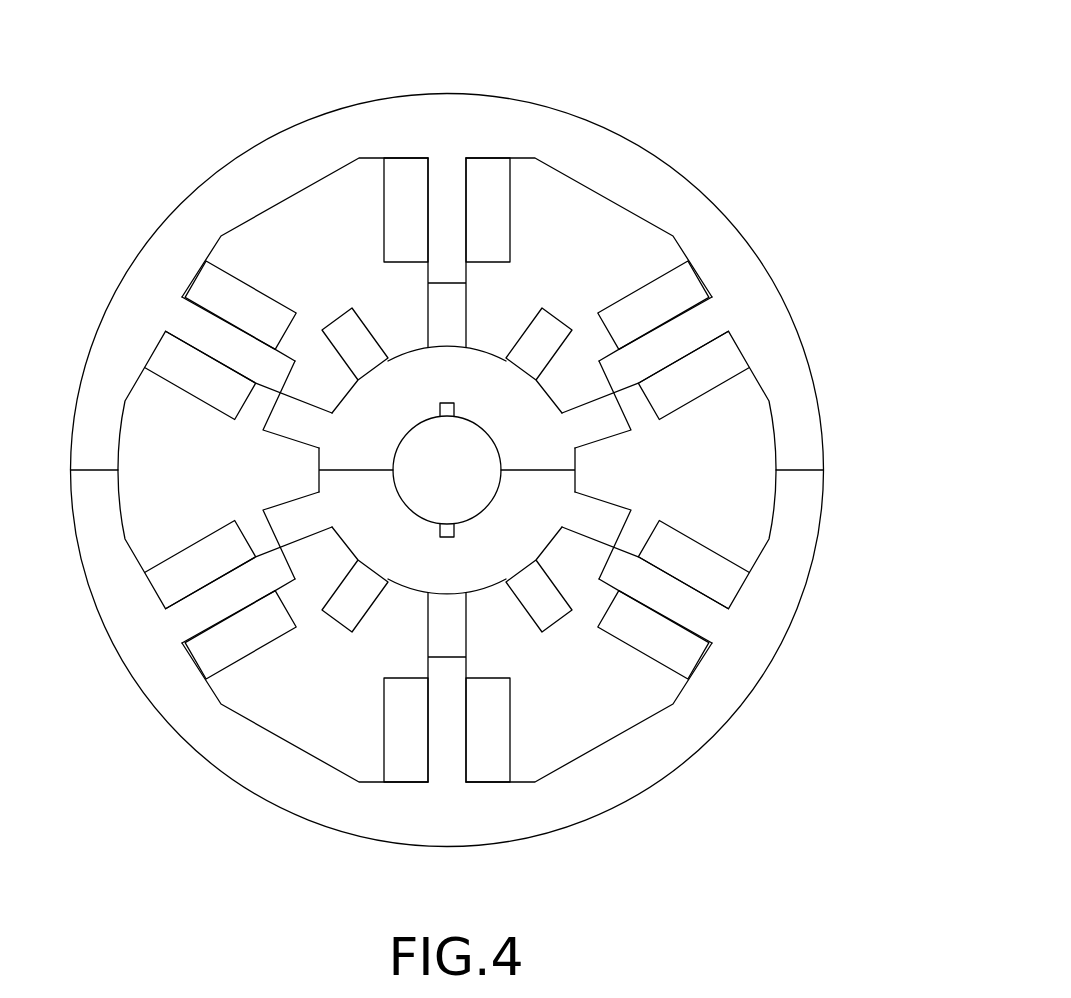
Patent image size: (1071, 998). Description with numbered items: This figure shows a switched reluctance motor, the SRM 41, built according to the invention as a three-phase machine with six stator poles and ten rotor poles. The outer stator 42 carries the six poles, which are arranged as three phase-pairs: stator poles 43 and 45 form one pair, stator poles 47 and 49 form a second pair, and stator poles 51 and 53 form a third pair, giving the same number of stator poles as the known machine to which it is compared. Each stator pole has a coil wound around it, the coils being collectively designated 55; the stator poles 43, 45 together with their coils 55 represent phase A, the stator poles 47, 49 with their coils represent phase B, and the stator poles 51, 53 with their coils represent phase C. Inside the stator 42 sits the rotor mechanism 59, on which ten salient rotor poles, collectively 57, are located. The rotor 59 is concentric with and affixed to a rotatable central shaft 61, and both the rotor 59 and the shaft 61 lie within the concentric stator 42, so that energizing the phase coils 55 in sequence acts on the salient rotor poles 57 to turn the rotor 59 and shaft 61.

The SRM 41 is at (640, 86).
The stator 42 is at (813, 438).
The stator pole 43 is at (448, 174).
The stator pole 45 is at (448, 757).
The stator pole 47 is at (711, 316).
The stator pole 49 is at (185, 615).
The stator pole 51 is at (705, 628).
The stator pole 53 is at (185, 323).
The coils 55 is at (398, 214).
The salient rotor poles 57 is at (292, 425).
The rotor mechanism 59 is at (497, 590).
The rotatable central shaft 61 is at (460, 432).